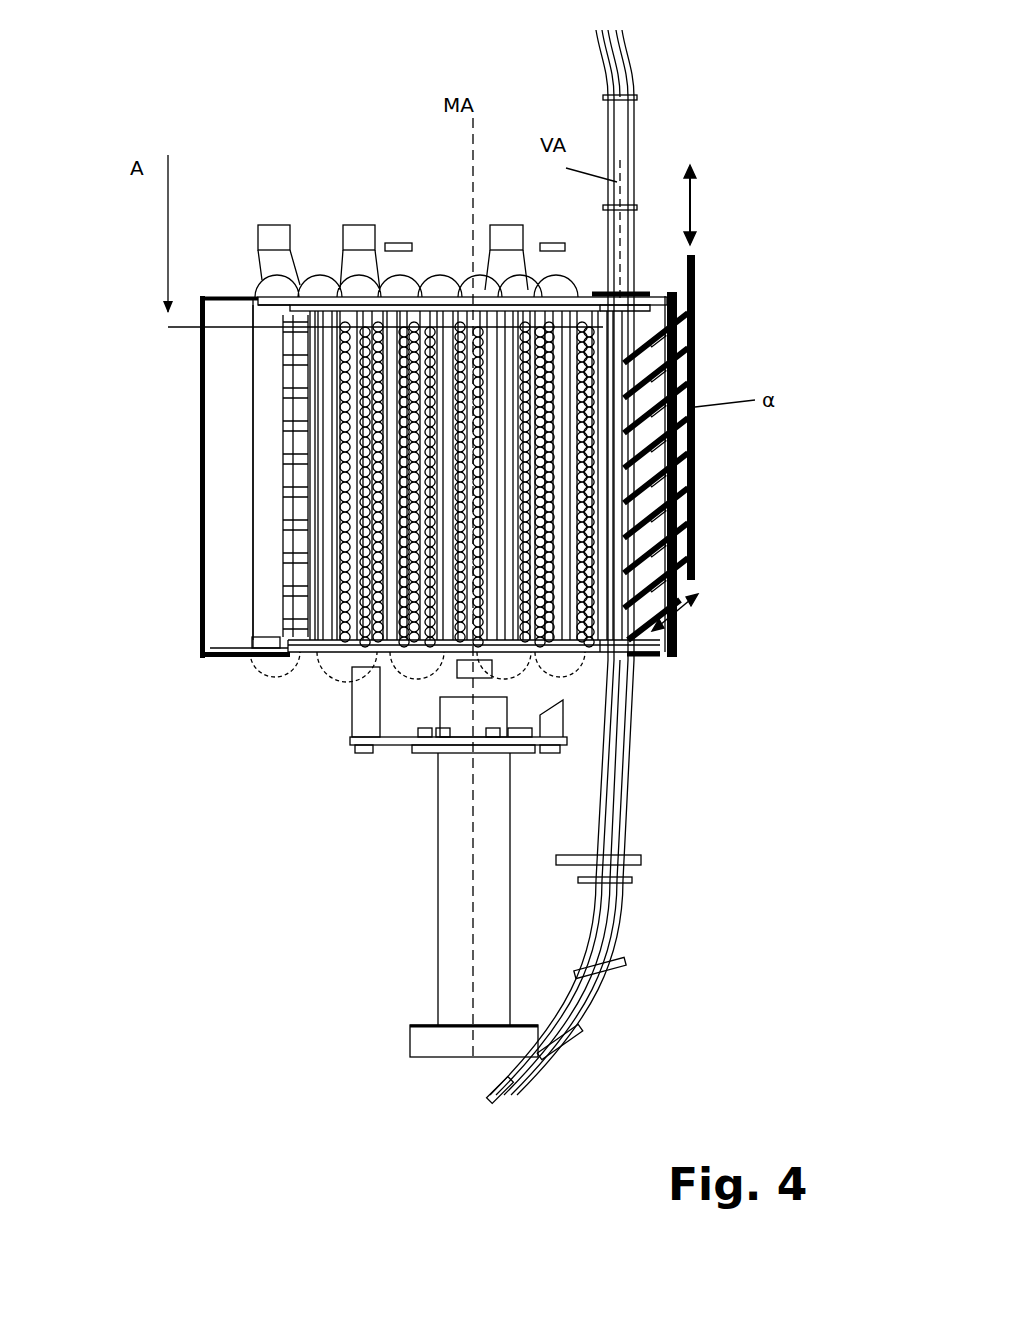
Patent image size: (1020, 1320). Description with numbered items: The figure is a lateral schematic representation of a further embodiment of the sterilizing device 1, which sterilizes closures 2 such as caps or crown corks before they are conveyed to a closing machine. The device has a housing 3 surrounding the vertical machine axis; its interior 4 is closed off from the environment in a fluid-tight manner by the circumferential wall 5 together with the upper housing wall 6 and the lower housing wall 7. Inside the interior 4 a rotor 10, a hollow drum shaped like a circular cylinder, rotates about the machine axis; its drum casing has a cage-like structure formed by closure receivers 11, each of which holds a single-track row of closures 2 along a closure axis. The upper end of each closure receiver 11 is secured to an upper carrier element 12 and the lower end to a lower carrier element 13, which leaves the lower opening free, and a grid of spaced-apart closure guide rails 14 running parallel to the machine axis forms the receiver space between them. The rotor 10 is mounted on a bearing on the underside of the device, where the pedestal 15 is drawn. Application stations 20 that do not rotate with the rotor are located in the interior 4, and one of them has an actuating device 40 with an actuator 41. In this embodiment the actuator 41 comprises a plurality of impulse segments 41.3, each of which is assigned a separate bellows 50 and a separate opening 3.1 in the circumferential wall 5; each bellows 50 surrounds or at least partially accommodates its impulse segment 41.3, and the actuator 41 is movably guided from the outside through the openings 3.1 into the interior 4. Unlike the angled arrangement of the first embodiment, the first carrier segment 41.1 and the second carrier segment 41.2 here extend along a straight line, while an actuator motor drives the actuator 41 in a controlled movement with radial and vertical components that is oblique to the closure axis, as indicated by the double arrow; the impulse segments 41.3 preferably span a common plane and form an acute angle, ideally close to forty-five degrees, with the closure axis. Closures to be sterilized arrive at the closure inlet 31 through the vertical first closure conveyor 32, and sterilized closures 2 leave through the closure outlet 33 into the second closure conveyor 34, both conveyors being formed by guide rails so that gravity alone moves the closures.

The sterilizing device 1 is at (208, 115).
The closures 2 is at (398, 632).
The housing 3 is at (176, 420).
The opening 3.1 is at (692, 525).
The interior 4 is at (233, 540).
The circumferential wall 5 is at (207, 485).
The upper housing wall 6 is at (258, 298).
The lower housing wall 7 is at (240, 655).
The rotor 10 is at (300, 382).
The closure receiver 11 is at (446, 640).
The upper carrier element 12 is at (293, 310).
The lower carrier element 13 is at (305, 645).
The closure guide rails 14 is at (462, 316).
The pedestal / drive mount 15 is at (510, 728).
The application stations 20 is at (258, 520).
The closure inlet 31 is at (610, 290).
The first closure conveyor 32 is at (628, 150).
The closure outlet 33 is at (603, 661).
The second closure conveyor 34 is at (615, 822).
The actuating device 40 is at (800, 355).
The actuator 41 is at (702, 608).
The first carrier segment 41.1 is at (695, 283).
The second carrier segment 41.2 is at (695, 555).
The impulse segments 41.3 is at (690, 432).
The bellows 50 is at (688, 348).